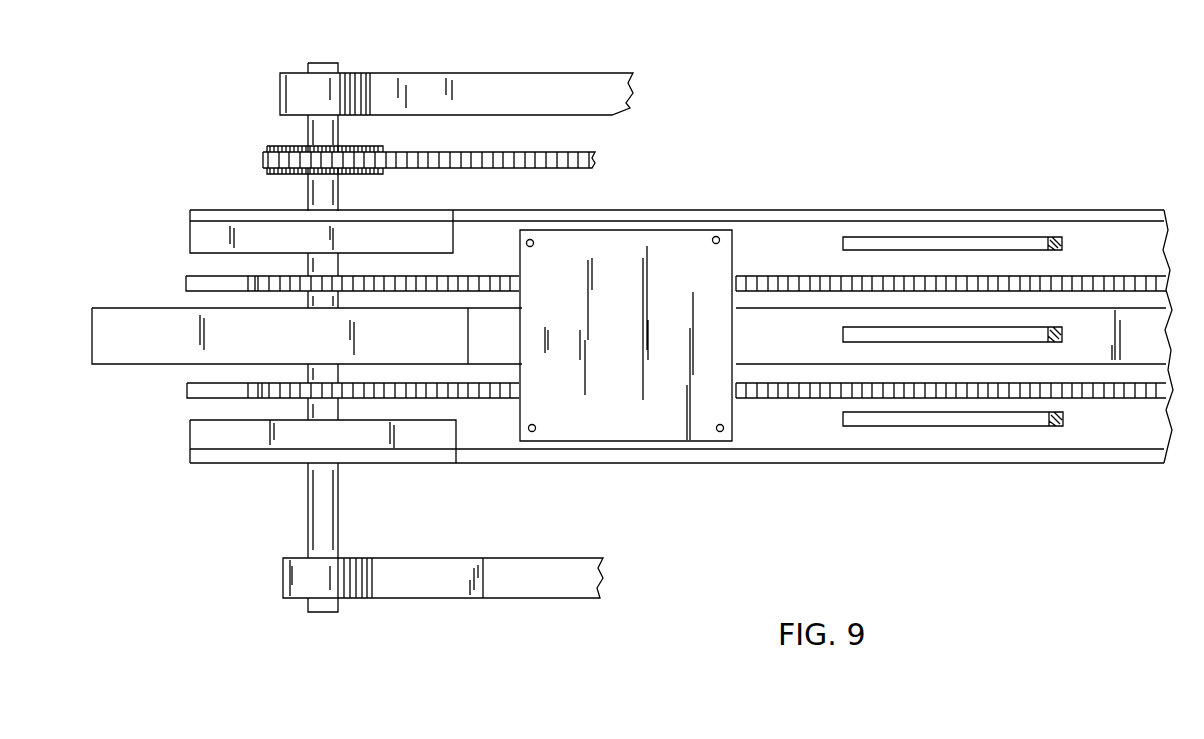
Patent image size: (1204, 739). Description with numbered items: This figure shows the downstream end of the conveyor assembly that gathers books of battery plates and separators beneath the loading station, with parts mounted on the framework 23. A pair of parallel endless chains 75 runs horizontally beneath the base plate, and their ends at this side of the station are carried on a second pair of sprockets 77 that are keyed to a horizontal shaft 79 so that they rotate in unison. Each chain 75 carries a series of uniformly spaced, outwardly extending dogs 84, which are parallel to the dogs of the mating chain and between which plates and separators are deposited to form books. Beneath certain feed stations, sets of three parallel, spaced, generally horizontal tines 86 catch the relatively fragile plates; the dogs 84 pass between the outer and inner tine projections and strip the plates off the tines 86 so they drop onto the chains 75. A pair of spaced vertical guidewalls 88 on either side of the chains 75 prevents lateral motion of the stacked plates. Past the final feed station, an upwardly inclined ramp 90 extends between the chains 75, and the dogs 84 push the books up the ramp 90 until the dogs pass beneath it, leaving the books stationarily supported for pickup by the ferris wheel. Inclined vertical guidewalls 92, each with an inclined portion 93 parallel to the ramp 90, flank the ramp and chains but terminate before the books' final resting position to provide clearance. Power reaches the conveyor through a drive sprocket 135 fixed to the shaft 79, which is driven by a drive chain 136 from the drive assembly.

The framework 23 is at (440, 585).
The endless chains 75 is at (473, 283).
The second pair of sprockets 77 is at (282, 290).
The horizontal shaft 79 is at (316, 526).
The dogs 84 is at (192, 285).
The tines 86 is at (860, 240).
The vertical guidewalls 88 is at (1114, 210).
The inclined ramp 90 is at (125, 352).
The inclined vertical guidewalls 92 is at (363, 215).
The inclined portion 93 is at (200, 238).
The drive sprocket 135 is at (263, 163).
The drive chain 136 is at (492, 156).